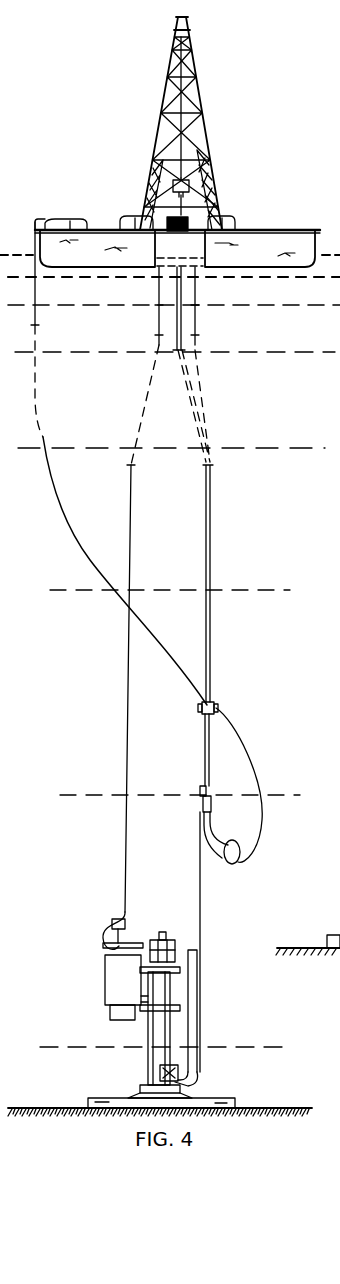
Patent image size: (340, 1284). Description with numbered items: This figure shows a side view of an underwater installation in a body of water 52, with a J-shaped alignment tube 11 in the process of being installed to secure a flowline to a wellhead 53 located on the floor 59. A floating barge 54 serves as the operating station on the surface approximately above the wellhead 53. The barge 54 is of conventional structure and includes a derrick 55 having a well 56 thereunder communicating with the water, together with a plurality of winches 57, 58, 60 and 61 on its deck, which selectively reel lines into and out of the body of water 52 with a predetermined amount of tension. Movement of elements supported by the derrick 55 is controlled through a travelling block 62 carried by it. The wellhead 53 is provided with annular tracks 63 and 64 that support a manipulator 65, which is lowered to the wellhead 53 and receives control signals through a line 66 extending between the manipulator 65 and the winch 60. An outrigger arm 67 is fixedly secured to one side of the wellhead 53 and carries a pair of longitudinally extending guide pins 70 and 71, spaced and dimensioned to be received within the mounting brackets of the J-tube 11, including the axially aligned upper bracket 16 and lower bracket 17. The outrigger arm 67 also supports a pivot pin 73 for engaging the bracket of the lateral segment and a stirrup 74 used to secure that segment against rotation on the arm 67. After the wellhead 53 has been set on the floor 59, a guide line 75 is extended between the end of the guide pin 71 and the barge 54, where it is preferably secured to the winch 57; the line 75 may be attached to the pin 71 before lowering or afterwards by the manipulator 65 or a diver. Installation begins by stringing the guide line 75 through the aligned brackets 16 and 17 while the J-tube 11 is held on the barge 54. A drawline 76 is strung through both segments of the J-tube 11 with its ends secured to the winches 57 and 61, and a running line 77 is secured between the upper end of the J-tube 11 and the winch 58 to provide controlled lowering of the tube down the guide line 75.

The J-shaped alignment tube 11 is at (211, 795).
The upwardly disposed mounting bracket 16 is at (200, 710).
The lower mounting bracket 17 is at (200, 794).
The body of water 52 is at (252, 404).
The wellhead 53 is at (135, 1077).
The floating barge 54 is at (234, 200).
The derrick 55 is at (203, 110).
The well 56 is at (206, 266).
The winch 57 is at (167, 222).
The winch 58 is at (233, 228).
The floor 59 is at (254, 1108).
The winch 60 is at (126, 226).
The winch 61 is at (68, 226).
The travelling block 62 is at (206, 163).
The annular track 63 is at (183, 970).
The annular track 64 is at (137, 1022).
The manipulator 65 is at (105, 979).
The line 66 is at (125, 873).
The outrigger arm 67 is at (200, 1052).
The guide pin 70 is at (198, 942).
The guide pin 71 is at (203, 942).
The pivot pin 73 is at (200, 1068).
The stirrup 74 is at (183, 1079).
The guide line 75 is at (205, 496).
The drawline 76 is at (159, 319).
The running line 77 is at (197, 321).